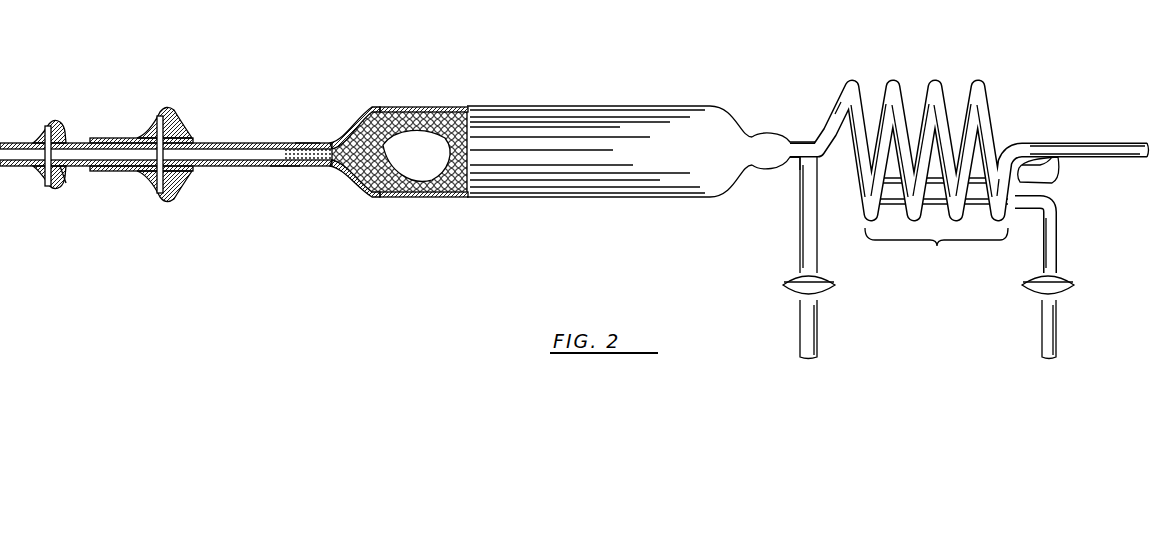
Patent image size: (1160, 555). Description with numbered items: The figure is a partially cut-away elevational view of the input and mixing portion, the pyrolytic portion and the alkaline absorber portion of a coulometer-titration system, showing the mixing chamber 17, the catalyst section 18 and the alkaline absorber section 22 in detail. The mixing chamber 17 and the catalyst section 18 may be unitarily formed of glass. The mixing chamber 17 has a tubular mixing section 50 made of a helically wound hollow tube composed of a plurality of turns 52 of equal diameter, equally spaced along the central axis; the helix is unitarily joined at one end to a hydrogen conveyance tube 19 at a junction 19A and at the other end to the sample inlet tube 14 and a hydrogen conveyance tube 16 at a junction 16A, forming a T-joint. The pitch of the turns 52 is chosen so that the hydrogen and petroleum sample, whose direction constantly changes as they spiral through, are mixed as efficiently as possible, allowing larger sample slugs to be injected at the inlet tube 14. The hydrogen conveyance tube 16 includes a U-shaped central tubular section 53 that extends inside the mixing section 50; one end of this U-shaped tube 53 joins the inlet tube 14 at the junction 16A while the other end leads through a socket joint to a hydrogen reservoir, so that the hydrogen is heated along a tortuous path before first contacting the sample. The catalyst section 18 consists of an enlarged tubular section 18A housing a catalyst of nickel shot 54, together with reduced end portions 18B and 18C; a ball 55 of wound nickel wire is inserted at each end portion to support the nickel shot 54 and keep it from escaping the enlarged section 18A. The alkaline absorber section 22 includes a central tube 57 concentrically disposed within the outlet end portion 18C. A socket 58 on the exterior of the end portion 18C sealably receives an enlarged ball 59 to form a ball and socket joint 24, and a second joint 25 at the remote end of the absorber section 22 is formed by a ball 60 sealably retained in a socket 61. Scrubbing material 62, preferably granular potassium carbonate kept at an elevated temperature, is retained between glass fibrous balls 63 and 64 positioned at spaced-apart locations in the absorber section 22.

The sample inlet tube 14 is at (1103, 141).
The hydrogen conveyance tube 16 is at (1048, 268).
The junction 16A is at (1050, 148).
The mixing chamber 17 is at (968, 110).
The catalyst section 18 is at (543, 148).
The enlarged tubular section 18A is at (501, 106).
The reduced end portion 18B is at (770, 138).
The reduced end portion 18C is at (330, 135).
The hydrogen conveyance tube 19 is at (801, 238).
The junction 19A is at (800, 158).
The alkaline absorber section 22 is at (225, 175).
The ball and socket joint 24 is at (158, 108).
The second joint 25 is at (58, 156).
The tubular mixing section 50 is at (936, 226).
The turns 52 is at (860, 80).
The U-shaped central tubular section 53 is at (1024, 208).
The nickel shot 54 is at (426, 164).
The ball 55 is at (334, 172).
The central tube 57 is at (247, 153).
The socket 58 is at (164, 198).
The enlarged ball 59 is at (185, 132).
The ball 60 is at (66, 170).
The socket 61 is at (47, 182).
The scrubbing material 62 is at (303, 168).
The glass fibrous ball 63 is at (280, 170).
The glass fibrous ball 64 is at (310, 141).